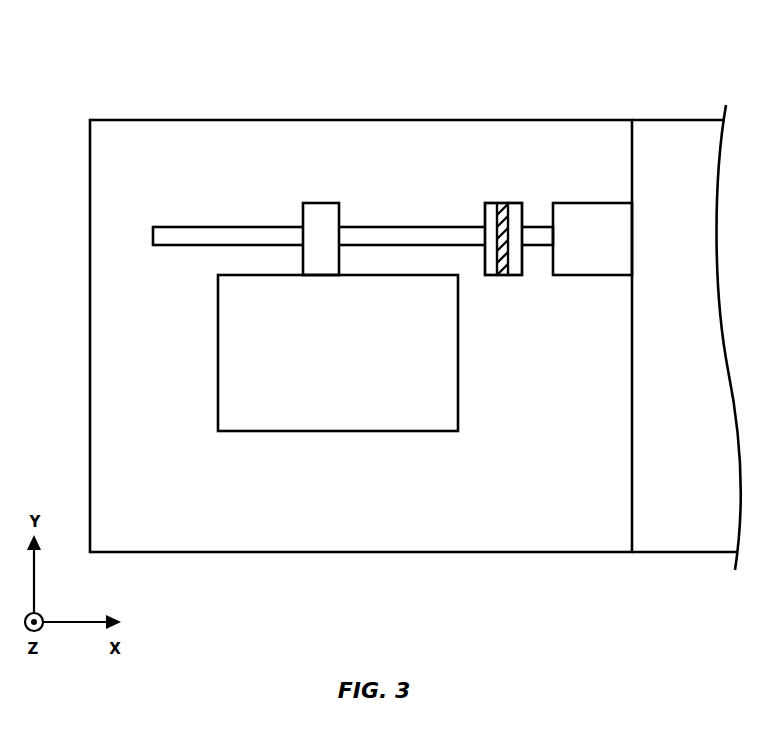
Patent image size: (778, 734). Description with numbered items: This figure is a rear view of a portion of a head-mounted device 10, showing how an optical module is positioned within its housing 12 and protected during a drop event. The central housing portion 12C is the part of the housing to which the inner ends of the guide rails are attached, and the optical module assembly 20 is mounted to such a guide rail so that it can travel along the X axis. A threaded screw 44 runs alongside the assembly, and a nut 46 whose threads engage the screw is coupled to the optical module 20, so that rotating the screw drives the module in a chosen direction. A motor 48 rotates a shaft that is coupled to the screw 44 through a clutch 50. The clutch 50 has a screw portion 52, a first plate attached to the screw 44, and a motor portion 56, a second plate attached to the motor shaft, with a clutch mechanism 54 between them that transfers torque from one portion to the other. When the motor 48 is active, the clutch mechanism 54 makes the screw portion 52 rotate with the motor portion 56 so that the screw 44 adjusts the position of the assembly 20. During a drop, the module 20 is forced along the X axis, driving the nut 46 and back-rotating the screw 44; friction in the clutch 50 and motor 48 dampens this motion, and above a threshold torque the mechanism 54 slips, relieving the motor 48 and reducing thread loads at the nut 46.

The device 10 is at (113, 75).
The housing 12 is at (380, 119).
The central housing portion 12C is at (670, 135).
The optical module 20 is at (304, 436).
The screw 44 is at (225, 227).
The nut 46 is at (320, 205).
The motor 48 is at (598, 276).
The clutch 50 is at (502, 256).
The screw portion 52 is at (491, 276).
The clutch mechanism 54 is at (503, 276).
The motor portion 56 is at (513, 276).